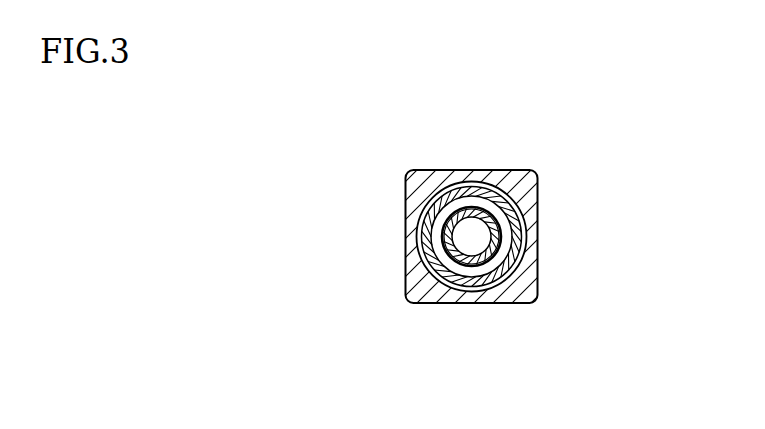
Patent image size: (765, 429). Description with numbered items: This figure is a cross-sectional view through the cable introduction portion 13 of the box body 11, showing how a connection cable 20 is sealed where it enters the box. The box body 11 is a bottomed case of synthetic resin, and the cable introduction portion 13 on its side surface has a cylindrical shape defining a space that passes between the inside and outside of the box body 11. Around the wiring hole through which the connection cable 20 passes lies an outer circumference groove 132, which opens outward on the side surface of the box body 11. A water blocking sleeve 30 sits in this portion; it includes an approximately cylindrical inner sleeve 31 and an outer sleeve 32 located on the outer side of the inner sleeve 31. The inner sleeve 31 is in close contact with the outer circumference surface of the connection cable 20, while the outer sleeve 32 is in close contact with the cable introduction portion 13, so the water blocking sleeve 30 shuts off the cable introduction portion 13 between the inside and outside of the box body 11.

The box body 11 is at (362, 193).
The cable introduction portion 13 is at (498, 176).
The outer circumference groove 132 is at (535, 187).
The water blocking sleeve 30 is at (452, 181).
The inner sleeve 31 is at (525, 259).
The outer sleeve 32 is at (522, 240).
The connection cable 20 is at (472, 237).